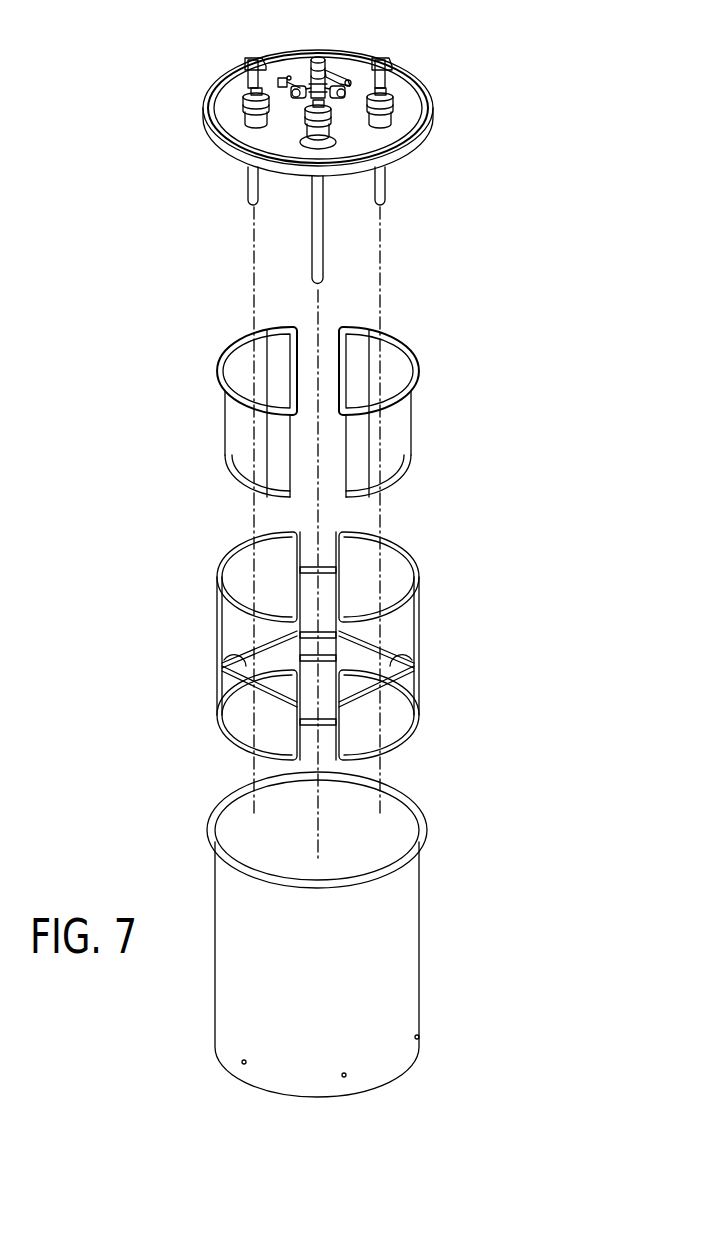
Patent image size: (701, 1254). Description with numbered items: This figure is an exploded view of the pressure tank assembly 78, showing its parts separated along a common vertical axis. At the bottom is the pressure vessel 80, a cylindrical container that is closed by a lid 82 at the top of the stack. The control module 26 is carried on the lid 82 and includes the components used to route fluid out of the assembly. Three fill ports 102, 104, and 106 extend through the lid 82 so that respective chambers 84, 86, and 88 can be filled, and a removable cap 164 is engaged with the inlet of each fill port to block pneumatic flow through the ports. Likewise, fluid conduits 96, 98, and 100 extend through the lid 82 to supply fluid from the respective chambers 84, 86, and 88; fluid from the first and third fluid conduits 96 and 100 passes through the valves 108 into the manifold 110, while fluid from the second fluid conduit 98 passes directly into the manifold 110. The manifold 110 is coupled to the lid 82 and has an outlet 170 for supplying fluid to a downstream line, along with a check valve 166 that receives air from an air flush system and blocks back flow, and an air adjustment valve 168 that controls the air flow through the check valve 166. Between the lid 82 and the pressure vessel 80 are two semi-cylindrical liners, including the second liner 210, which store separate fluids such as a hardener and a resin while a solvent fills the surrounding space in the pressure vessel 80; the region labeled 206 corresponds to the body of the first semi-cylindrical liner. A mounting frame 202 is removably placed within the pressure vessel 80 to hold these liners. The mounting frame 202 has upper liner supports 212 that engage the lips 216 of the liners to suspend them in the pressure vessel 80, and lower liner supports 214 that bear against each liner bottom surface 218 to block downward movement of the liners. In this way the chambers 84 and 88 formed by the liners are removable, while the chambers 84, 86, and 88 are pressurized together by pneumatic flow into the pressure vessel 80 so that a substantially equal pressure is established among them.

The control module 26 is at (472, 37).
The pressure tank assembly 78 is at (142, 1003).
The pressure vessel 80 is at (398, 1077).
The lid 82 is at (430, 114).
The first chamber 84 is at (243, 358).
The second chamber 86 is at (403, 818).
The third chamber 88 is at (393, 358).
The first fluid conduit 96 is at (260, 66).
The second fluid conduit 98 is at (323, 270).
The third fluid conduit 100 is at (384, 64).
The fill port 102 is at (232, 142).
The fill port 104 is at (308, 125).
The fill port 106 is at (413, 142).
The valve 108 is at (288, 78).
The manifold 110 is at (348, 86).
The removable cap 164 is at (248, 107).
The check valve 166 is at (265, 63).
The air adjustment valve 168 is at (325, 58).
The outlet 170 is at (288, 78).
The mounting frame 202 is at (404, 740).
The first wall 206 is at (224, 421).
The second liner 210 is at (412, 421).
The upper liner support 212 is at (240, 546).
The lower liner support 214 is at (222, 652).
The lip 216 is at (220, 377).
The liner bottom surface 218 is at (241, 482).